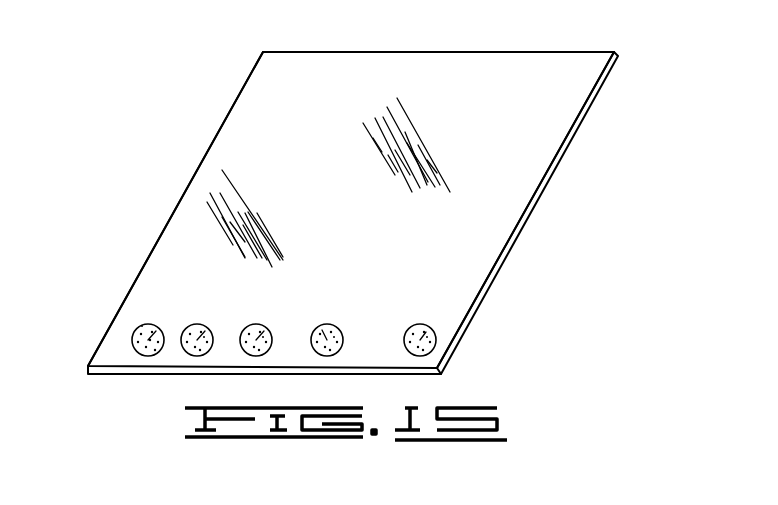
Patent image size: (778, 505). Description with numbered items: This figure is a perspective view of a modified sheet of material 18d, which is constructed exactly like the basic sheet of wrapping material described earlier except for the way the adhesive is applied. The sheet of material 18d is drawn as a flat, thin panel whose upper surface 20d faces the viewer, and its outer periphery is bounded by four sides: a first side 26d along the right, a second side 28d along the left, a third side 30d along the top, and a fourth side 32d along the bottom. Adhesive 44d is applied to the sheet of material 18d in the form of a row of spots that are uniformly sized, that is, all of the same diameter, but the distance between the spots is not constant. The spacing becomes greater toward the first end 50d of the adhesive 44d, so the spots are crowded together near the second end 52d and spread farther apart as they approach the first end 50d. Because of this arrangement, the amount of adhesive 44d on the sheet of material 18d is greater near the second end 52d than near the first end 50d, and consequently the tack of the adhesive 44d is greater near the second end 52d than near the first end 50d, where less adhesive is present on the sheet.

The sheet of material 18d is at (361, 201).
The upper surface 20d is at (378, 63).
The third side 30d is at (480, 52).
The second side 28d is at (222, 125).
The first side 26d is at (551, 175).
The fourth side 32d is at (431, 373).
The adhesive 44d is at (280, 316).
The second end of the adhesive 52d is at (130, 327).
The first end of the adhesive 50d is at (444, 338).